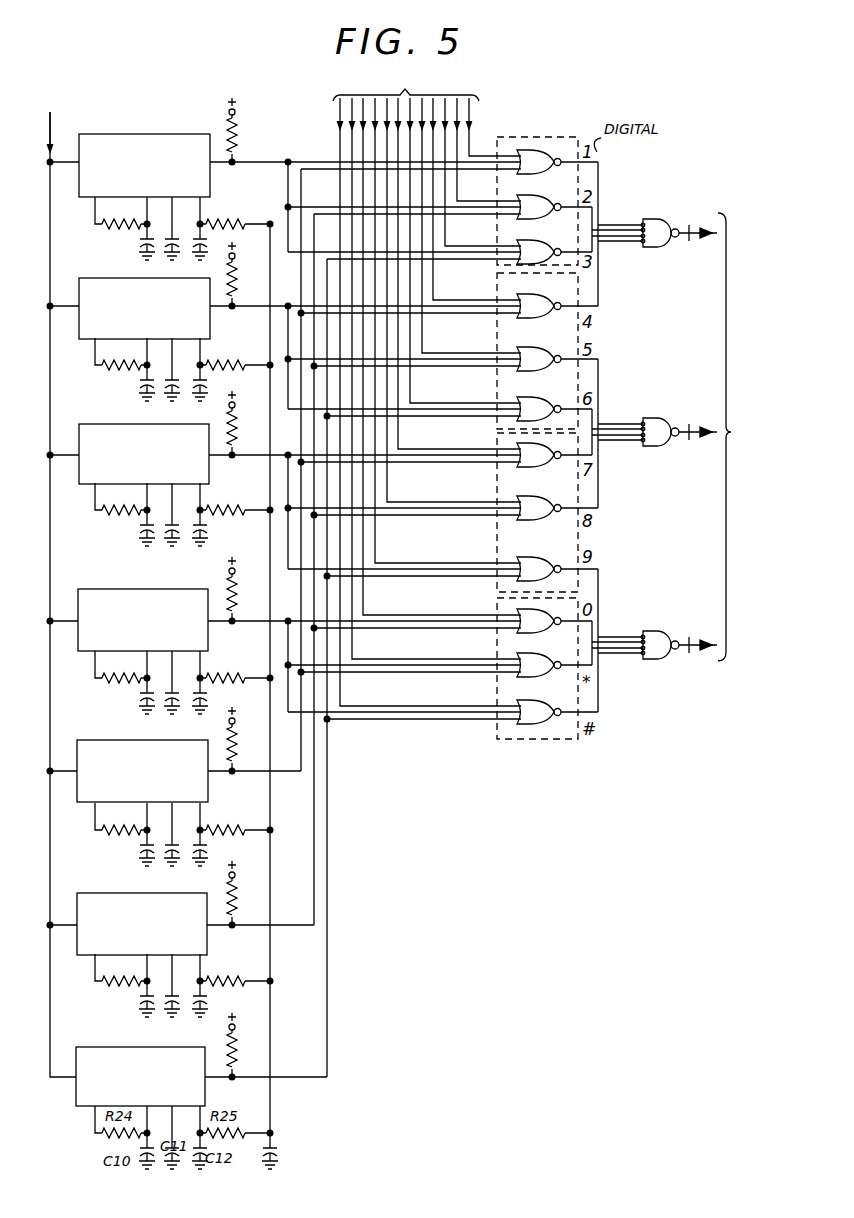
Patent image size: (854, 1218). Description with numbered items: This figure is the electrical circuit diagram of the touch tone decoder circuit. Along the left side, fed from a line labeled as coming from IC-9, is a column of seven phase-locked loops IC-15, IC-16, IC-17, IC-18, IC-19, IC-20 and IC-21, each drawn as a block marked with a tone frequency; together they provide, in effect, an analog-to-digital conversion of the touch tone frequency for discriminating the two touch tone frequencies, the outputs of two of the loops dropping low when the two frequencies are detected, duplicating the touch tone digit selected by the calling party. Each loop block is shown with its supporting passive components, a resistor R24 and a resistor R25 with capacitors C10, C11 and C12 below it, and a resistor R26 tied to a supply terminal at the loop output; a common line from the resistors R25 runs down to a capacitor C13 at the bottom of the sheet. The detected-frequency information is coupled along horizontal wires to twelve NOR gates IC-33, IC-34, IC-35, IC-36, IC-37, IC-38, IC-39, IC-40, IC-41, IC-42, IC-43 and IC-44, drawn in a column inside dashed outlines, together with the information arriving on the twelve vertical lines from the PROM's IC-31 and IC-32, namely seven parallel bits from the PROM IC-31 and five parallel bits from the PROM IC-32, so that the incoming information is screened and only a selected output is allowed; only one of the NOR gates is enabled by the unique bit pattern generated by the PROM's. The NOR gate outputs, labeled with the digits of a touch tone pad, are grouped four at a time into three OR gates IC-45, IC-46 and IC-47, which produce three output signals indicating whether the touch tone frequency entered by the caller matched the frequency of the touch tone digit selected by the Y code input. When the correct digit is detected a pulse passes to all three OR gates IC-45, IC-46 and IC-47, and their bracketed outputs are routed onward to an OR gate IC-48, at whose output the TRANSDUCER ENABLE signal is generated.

The keyboard encoder input IC-9 is at (58, 122).
The phase-locked loop IC-15 is at (133, 137).
The phase-locked loop IC-16 is at (131, 281).
The phase-locked loop IC-17 is at (133, 427).
The phase-locked loop IC-18 is at (131, 591).
The phase-locked loop IC-19 is at (131, 742).
The phase-locked loop IC-20 is at (131, 895).
The phase-locked loop IC-21 is at (143, 1067).
The resistor R24 is at (121, 213).
The resistor R25 is at (235, 214).
The resistor R26 is at (249, 132).
The capacitor C10 is at (136, 228).
The capacitor C11 is at (180, 228).
The capacitor C12 is at (213, 228).
The capacitor C13 is at (286, 696).
The PROM IC-31 is at (409, 86).
The PROM IC-32 is at (405, 114).
The NOR gate IC-33 is at (528, 150).
The NOR gate IC-34 is at (554, 200).
The NOR gate IC-35 is at (552, 244).
The NOR gate IC-36 is at (552, 299).
The NOR gate IC-37 is at (552, 352).
The NOR gate IC-38 is at (552, 404).
The NOR gate IC-39 is at (549, 470).
The NOR gate IC-40 is at (546, 516).
The NOR gate IC-41 is at (548, 561).
The NOR gate IC-42 is at (546, 629).
The NOR gate IC-43 is at (546, 674).
The NOR gate IC-44 is at (540, 725).
The OR gate IC-45 is at (671, 207).
The OR gate IC-46 is at (668, 404).
The OR gate IC-47 is at (667, 617).
The OR gate IC-48 is at (752, 437).